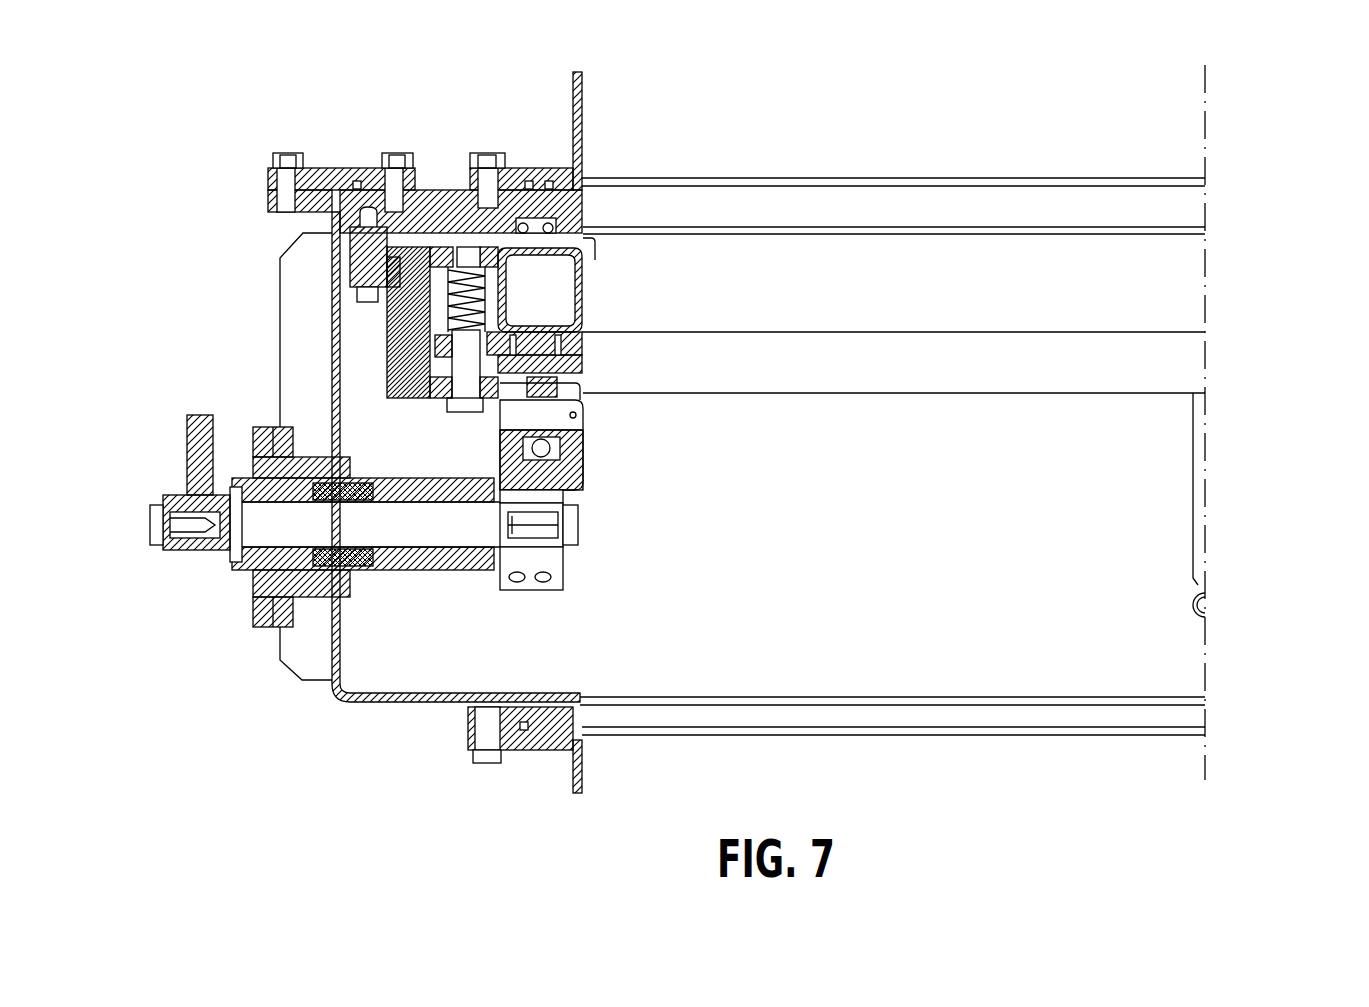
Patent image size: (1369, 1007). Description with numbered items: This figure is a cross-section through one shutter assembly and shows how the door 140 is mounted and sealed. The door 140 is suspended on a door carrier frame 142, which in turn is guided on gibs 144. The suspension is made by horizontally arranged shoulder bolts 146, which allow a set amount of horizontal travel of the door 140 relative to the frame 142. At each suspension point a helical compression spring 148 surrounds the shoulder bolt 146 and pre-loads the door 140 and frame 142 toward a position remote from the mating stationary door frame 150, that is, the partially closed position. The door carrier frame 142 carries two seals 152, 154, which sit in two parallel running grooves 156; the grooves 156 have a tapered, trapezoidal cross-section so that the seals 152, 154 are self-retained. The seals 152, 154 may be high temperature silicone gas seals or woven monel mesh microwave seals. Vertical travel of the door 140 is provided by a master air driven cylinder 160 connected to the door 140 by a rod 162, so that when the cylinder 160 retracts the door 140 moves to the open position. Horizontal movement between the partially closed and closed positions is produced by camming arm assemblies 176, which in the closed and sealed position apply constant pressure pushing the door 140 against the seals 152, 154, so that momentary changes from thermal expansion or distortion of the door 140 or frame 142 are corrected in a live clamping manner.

The door 140 is at (780, 222).
The door carrier frame 142 is at (421, 247).
The gibs 144 is at (350, 258).
The shoulder bolts 146 is at (455, 408).
The helical compression spring 148 is at (456, 247).
The stationary door frame 150 is at (535, 172).
The seal 152 is at (530, 225).
The seal 154 is at (583, 187).
The grooves 156 is at (552, 222).
The master air driven cylinder 160 is at (1207, 610).
The rod 162 is at (1207, 498).
The camming arm assemblies 176 is at (567, 437).